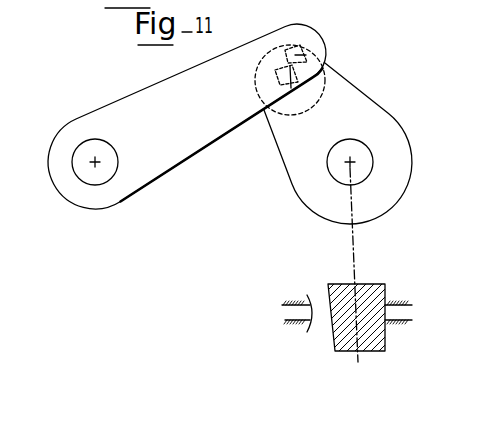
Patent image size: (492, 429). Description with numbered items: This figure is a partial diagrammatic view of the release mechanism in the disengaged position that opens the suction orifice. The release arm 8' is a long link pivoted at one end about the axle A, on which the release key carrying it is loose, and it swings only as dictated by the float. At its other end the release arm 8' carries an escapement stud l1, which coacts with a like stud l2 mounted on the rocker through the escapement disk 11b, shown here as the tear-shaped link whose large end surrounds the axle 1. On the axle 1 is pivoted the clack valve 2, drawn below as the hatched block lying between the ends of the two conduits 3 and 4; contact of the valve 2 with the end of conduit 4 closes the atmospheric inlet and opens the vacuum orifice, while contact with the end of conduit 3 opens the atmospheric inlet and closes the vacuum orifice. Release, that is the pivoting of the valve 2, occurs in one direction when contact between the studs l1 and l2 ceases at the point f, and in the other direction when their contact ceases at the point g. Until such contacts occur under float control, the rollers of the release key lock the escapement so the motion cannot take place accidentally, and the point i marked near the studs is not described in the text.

The release arm 8' is at (187, 116).
The axle A is at (95, 162).
The escapement disk 11b is at (397, 193).
The axle 1 is at (350, 162).
The point g is at (298, 45).
The escapement stud l1 is at (295, 55).
The point f is at (290, 66).
The escapement stud l2 is at (285, 77).
The point i is at (291, 88).
The clack valve 2 is at (385, 346).
The conduit 3 is at (288, 311).
The conduit 4 is at (403, 312).